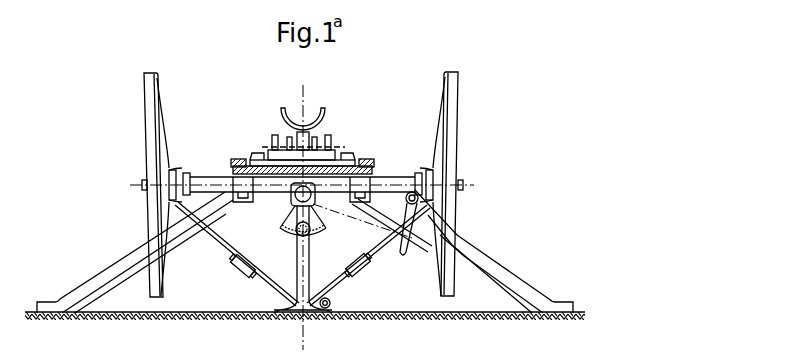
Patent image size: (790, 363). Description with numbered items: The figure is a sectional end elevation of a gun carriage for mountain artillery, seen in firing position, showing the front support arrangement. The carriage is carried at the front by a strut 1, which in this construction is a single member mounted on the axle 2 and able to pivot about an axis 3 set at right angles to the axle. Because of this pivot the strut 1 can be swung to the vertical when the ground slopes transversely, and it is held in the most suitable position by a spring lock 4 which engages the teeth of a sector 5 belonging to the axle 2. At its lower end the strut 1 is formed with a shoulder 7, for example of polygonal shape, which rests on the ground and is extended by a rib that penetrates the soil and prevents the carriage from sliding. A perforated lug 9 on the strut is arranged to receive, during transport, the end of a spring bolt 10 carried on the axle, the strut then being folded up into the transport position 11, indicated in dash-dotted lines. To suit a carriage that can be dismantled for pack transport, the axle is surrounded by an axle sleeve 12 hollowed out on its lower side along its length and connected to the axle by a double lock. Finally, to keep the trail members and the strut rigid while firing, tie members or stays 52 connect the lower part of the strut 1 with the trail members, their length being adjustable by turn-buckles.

The strut 1 is at (309, 273).
The axle 2 is at (277, 186).
The axis 3 is at (315, 202).
The spring lock 4 is at (298, 232).
The sector 5 is at (313, 218).
The shoulder 7 is at (277, 309).
The perforated lug 9 is at (331, 302).
The spring bolt 10 is at (390, 218).
The transport position 11 is at (408, 247).
The axle sleeve 12 is at (266, 162).
The tie members or stays 52 is at (235, 247).